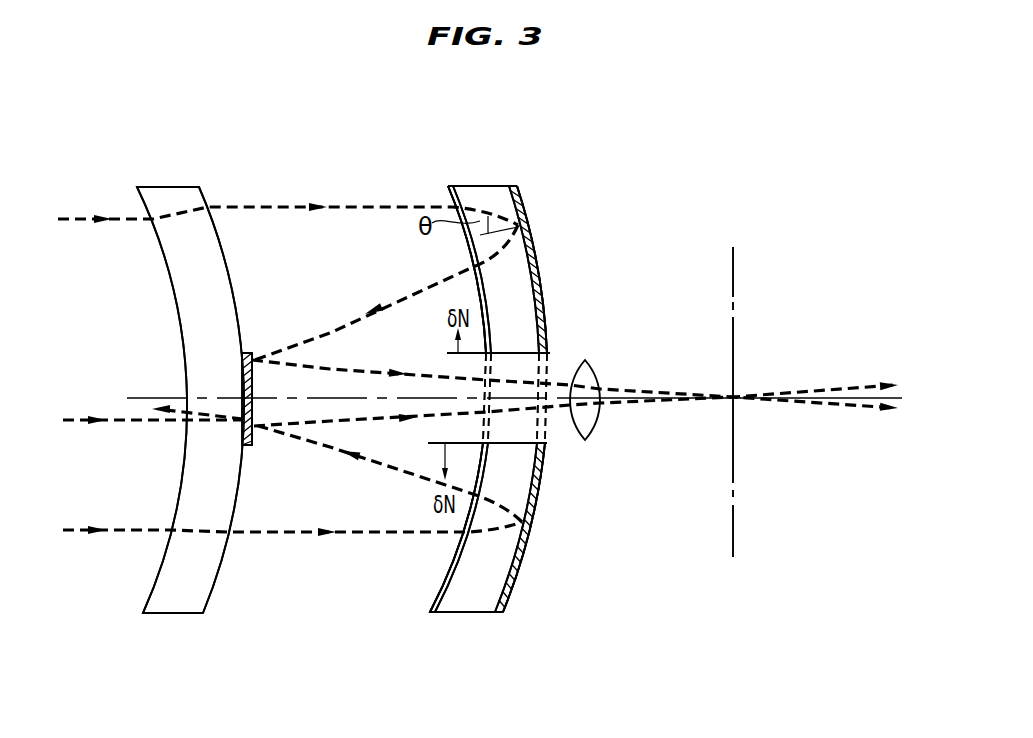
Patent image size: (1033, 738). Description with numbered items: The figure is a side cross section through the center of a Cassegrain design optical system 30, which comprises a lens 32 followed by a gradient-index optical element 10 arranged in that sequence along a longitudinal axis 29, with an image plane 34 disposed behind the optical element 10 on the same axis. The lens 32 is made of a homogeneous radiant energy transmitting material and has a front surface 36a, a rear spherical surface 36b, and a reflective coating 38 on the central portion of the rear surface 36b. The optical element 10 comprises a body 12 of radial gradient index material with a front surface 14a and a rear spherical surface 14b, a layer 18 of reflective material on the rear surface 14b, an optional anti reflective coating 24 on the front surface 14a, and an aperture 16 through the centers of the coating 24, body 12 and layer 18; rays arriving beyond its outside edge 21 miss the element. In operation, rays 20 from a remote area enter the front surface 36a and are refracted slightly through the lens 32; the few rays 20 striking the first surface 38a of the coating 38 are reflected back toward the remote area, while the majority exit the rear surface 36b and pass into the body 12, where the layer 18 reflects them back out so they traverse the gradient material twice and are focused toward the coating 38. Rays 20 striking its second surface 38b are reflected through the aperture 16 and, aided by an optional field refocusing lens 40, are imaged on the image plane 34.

The optical element 10 is at (480, 186).
The body 12 is at (480, 603).
The front surface 14a is at (458, 574).
The rear surface 14b is at (518, 185).
The aperture 16 is at (513, 443).
The layer of reflective material 18 is at (537, 263).
The rays 20 is at (64, 217).
The outside edge 21 is at (450, 612).
The anti reflective coating 24 is at (447, 185).
The longitudinal axis 29 is at (618, 400).
The optical system 30 is at (339, 103).
The lens 32 is at (168, 186).
The image plane 34 is at (733, 278).
The front surface 36a is at (175, 291).
The rear spherical surface 36b is at (199, 190).
The reflective coating 38 is at (242, 383).
The first surface 38a is at (242, 366).
The second surface 38b is at (250, 413).
The field refocusing lens 40 is at (600, 378).